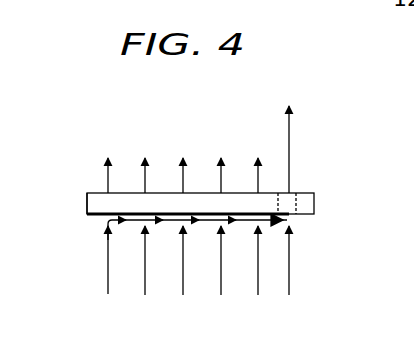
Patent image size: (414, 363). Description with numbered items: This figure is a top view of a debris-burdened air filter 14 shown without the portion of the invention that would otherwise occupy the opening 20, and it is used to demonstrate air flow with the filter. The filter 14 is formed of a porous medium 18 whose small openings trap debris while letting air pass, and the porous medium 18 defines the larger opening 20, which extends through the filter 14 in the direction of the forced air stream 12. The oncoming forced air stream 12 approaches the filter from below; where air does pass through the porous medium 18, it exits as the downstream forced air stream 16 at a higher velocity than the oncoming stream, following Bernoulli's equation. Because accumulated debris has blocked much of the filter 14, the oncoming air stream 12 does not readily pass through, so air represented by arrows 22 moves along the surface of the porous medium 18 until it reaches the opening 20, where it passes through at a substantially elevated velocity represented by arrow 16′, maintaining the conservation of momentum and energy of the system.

The forced air stream 12 is at (108, 275).
The air filter 14 is at (94, 206).
The downstream forced air stream 16 is at (145, 181).
The arrow representing elevated velocity air 16′ is at (290, 131).
The porous medium 18 is at (94, 193).
The opening 20 is at (297, 193).
The arrows representing air moving along surface 22 is at (140, 222).